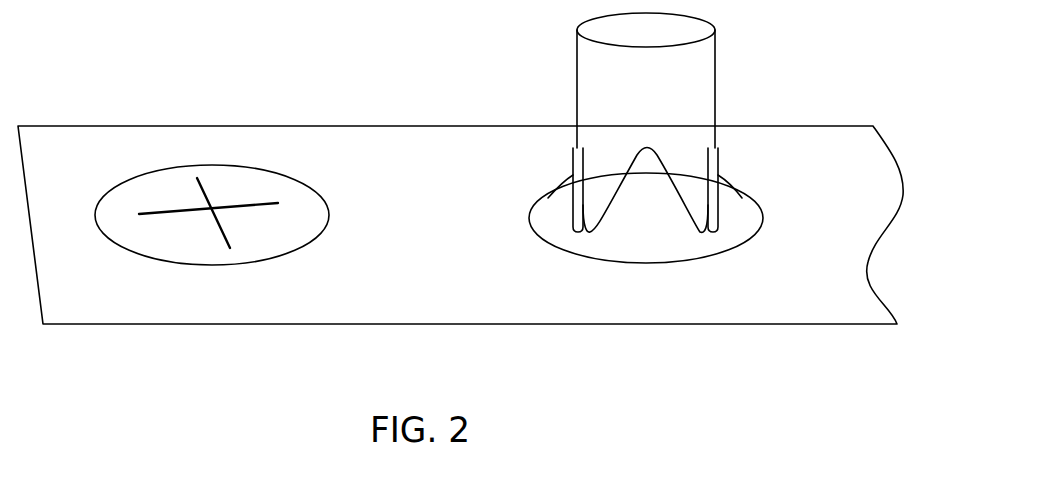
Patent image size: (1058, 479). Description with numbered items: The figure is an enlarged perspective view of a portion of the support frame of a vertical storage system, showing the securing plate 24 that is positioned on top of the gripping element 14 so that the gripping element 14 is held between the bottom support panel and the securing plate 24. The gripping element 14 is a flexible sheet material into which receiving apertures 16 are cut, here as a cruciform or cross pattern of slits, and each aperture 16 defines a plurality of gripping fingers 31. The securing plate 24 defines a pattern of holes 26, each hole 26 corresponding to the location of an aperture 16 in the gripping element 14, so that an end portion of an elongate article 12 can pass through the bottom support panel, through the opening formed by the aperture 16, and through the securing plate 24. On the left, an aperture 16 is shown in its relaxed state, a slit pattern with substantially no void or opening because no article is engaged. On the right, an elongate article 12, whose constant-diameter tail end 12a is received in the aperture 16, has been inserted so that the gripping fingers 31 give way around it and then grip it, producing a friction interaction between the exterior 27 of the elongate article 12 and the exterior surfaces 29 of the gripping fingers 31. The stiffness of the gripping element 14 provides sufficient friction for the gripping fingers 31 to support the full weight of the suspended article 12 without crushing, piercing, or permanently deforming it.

The elongate article 12 is at (645, 80).
The constant-diameter tail end 12a is at (715, 72).
The gripping element 14 is at (418, 221).
The receiving aperture 16 is at (175, 210).
The securing plate 24 is at (412, 212).
The hole 26 is at (150, 258).
The exterior 27 is at (577, 90).
The exterior surface 29 is at (583, 178).
The gripping finger 31 is at (188, 200).